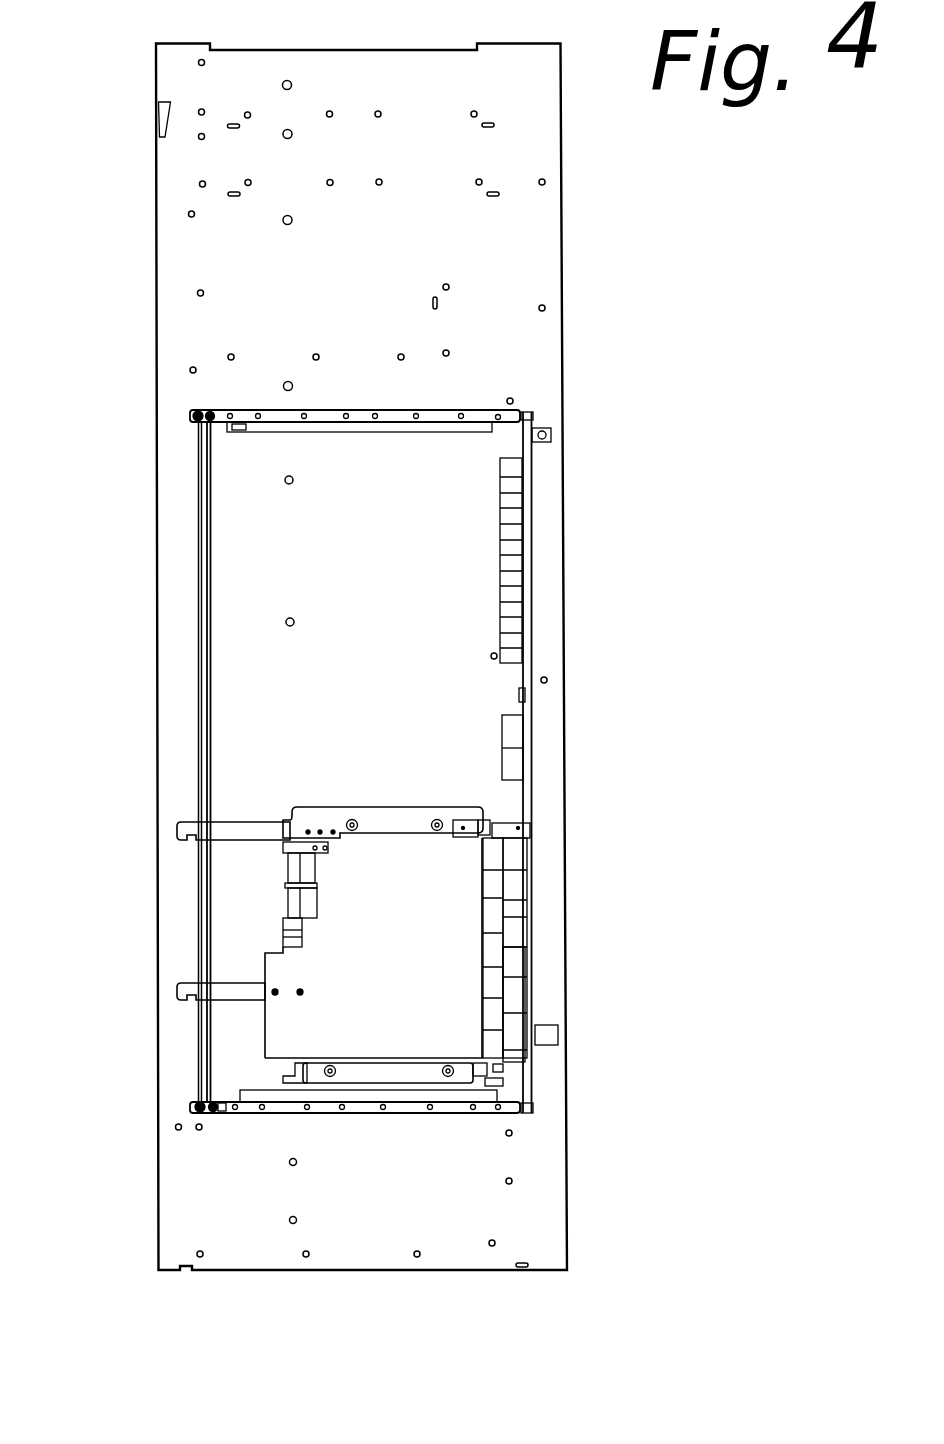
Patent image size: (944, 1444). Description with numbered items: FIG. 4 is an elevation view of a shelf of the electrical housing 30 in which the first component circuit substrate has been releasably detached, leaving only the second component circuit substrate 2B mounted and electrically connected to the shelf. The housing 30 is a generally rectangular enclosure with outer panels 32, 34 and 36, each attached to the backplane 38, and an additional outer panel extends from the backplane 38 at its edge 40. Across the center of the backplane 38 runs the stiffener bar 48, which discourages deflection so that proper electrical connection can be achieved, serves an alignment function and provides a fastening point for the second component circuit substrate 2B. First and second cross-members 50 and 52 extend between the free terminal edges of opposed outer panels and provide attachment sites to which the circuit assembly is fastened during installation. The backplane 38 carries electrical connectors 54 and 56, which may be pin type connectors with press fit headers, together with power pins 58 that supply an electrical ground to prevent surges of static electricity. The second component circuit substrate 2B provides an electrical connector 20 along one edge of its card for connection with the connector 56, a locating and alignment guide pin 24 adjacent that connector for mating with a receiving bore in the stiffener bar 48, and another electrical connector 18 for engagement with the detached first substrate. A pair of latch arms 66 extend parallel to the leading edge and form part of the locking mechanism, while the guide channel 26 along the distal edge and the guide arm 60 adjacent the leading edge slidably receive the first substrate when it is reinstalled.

The second component circuit substrate 2B is at (441, 932).
The electrical connector 18 is at (293, 873).
The electrical connector 20 is at (497, 883).
The locating and alignment guide pin 24 is at (464, 836).
The guide channel 26 is at (413, 813).
The electrical housing 30 is at (545, 398).
The outer panel 32 is at (427, 411).
The outer panel 34 is at (530, 1212).
The outer panel 36 is at (407, 1105).
The backplane 38 is at (529, 700).
The edge 40 is at (523, 764).
The stiffener bar 48 is at (520, 828).
The first cross-member 50 is at (193, 1108).
The second cross-member 52 is at (194, 412).
The electrical connector 54 is at (511, 658).
The electrical connector 56 is at (520, 921).
The power pins 58 is at (520, 1069).
The guide arm 60 is at (362, 1077).
The latch arms 66 is at (228, 828).